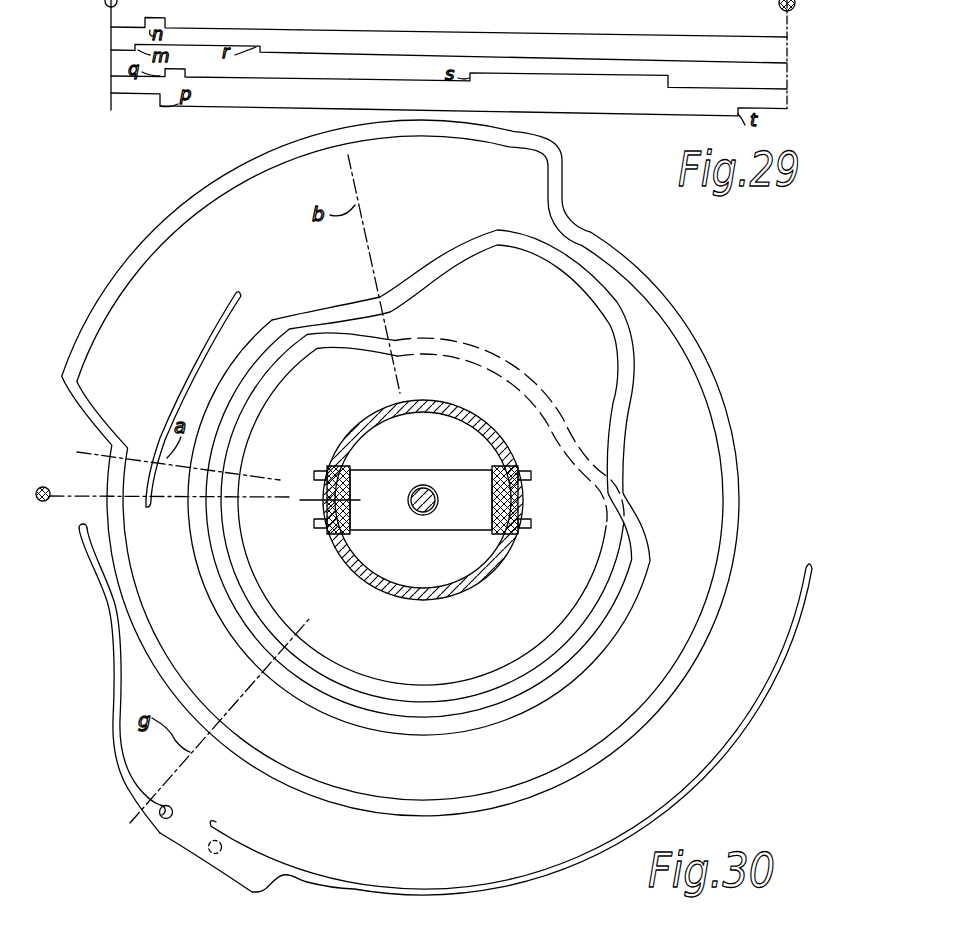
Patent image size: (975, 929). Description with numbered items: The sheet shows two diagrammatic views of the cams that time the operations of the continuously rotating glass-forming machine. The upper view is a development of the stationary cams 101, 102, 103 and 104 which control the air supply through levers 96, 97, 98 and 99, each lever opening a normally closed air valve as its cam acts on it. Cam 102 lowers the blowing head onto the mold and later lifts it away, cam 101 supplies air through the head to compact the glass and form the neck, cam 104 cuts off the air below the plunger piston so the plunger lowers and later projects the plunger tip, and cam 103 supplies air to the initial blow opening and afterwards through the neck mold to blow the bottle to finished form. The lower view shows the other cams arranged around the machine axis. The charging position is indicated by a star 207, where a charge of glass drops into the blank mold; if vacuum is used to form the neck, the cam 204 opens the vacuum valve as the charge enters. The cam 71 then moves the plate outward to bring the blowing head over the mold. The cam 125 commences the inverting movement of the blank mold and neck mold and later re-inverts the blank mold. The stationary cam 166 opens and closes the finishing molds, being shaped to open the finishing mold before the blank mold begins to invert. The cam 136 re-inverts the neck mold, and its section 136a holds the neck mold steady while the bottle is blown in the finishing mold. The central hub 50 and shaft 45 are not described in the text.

In FIG. 29, the lever 96 is at (189, 19).
In FIG. 29, the lever 97 is at (189, 44).
In FIG. 29, the lever 98 is at (214, 70).
In FIG. 29, the lever 99 is at (214, 96).
In FIG. 29, the stationary cam 101 is at (458, 36).
In FIG. 29, the stationary cam 102 is at (454, 58).
In FIG. 29, the stationary cam 103 is at (280, 80).
In FIG. 29, the stationary cam 104 is at (280, 104).
In FIG. 30, the cam 71 is at (237, 180).
In FIG. 30, the cam 125 is at (628, 440).
In FIG. 30, the stationary cam 166 is at (570, 687).
In FIG. 30, the hub 50 is at (395, 478).
In FIG. 30, the shaft 45 is at (416, 516).
In FIG. 30, the cam 204 is at (172, 372).
In FIG. 30, the star 207 is at (45, 503).
In FIG. 30, the cam 136 is at (108, 696).
In FIG. 30, the section of cam 136a is at (562, 858).